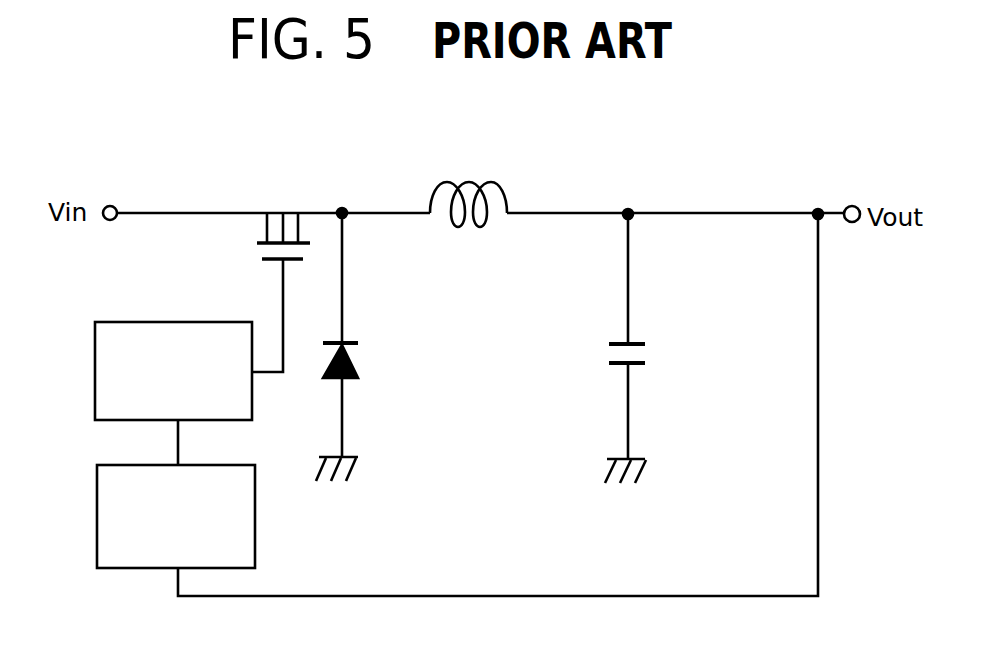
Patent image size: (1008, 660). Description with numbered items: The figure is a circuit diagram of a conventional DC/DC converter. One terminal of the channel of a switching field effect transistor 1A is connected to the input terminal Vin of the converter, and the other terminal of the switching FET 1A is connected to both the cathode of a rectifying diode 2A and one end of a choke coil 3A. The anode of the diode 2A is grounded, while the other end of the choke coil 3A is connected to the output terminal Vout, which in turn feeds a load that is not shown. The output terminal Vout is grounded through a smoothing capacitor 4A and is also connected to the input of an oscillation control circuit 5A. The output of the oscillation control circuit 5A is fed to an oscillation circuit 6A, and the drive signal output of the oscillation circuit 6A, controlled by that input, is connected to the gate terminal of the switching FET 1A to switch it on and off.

The switching field effect transistor 1A is at (275, 208).
The rectifying diode 2A is at (353, 362).
The choke coil 3A is at (450, 217).
The smoothing capacitor 4A is at (647, 353).
The oscillation control circuit 5A is at (152, 567).
The oscillation circuit 6A is at (192, 322).